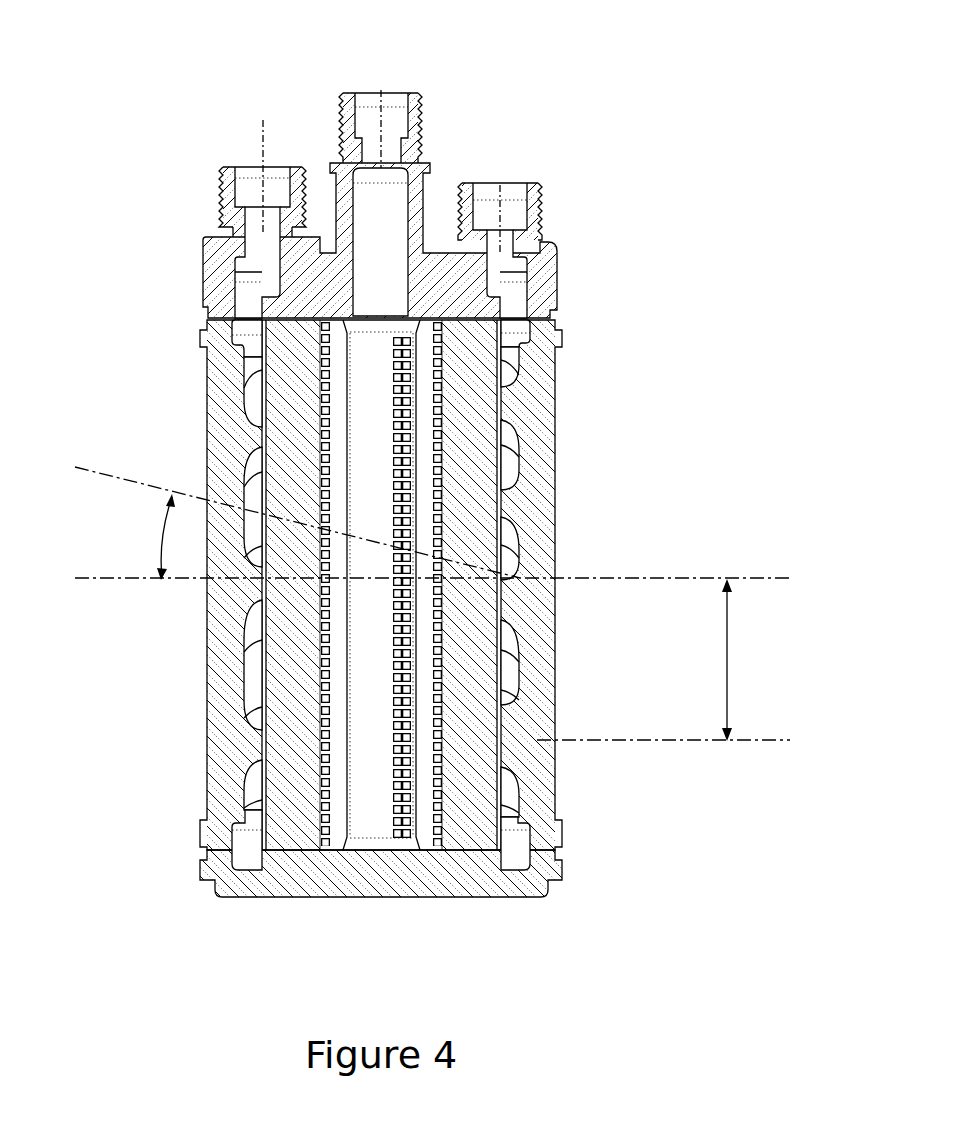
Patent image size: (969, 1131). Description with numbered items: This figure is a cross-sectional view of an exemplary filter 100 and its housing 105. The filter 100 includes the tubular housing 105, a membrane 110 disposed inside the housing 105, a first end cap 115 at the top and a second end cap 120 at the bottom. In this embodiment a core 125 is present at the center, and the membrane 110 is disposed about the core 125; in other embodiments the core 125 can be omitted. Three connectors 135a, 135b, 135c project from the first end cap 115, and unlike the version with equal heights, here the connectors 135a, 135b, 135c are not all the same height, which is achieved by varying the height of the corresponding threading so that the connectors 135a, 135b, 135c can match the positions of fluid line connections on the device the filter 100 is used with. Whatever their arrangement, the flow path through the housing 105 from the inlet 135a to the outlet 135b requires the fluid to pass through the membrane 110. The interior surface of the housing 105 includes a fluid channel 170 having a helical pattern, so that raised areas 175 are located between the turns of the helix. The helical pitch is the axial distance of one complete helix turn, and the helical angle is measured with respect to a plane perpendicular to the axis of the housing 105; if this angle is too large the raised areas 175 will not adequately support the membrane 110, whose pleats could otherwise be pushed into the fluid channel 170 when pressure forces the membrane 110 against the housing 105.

The filter 100 is at (150, 100).
The housing 105 is at (548, 372).
The membrane 110 is at (297, 425).
The first end cap 115 is at (547, 241).
The second end cap 120 is at (222, 876).
The core 125 is at (415, 432).
The inlet 135a is at (265, 166).
The outlet 135b is at (385, 92).
The connector 135c is at (500, 183).
The fluid channel 170 is at (252, 677).
The raised areas 175 is at (510, 500).